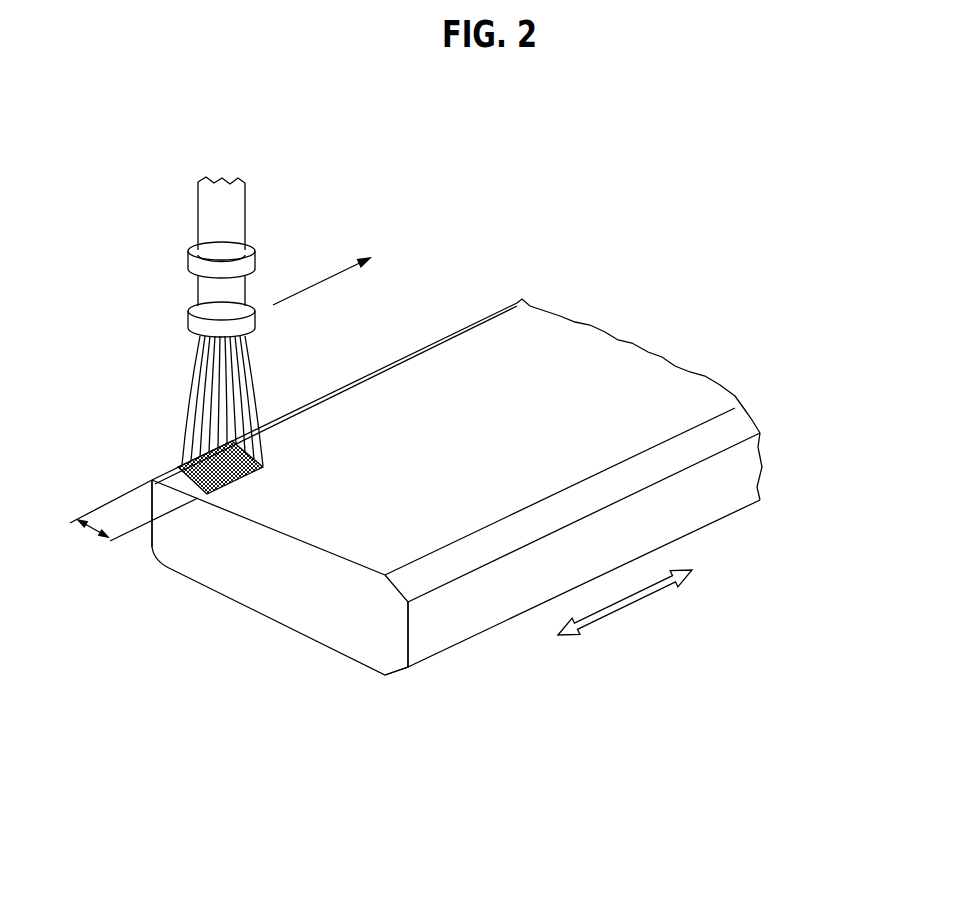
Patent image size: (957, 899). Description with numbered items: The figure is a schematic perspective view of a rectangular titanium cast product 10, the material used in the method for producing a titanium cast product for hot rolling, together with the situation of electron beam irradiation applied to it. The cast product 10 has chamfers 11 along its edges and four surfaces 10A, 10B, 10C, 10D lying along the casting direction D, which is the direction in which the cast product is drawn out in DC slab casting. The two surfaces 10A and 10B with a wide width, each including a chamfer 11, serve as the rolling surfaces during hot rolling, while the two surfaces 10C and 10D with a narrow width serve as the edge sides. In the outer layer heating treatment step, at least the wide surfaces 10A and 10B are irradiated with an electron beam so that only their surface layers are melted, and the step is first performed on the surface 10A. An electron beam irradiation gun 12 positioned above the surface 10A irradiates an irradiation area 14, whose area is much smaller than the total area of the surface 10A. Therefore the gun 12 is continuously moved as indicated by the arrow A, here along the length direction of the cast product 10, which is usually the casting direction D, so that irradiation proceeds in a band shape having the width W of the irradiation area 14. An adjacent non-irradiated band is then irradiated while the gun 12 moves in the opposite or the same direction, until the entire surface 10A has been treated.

The rectangular titanium cast product 10 is at (464, 525).
The surface with a wide width 10A is at (445, 390).
The surface with a wide width 10B is at (325, 650).
The surface with a narrow width 10C is at (140, 532).
The surface with a narrow width 10D is at (483, 597).
The chamfer 11 is at (700, 443).
The electron beam irradiation gun 12 is at (205, 289).
The irradiation area 14 is at (192, 458).
The arrow indicating direction of movement of the electron beam irradiation gun A is at (313, 285).
The casting direction D is at (638, 603).
The width of the irradiation area W is at (93, 536).